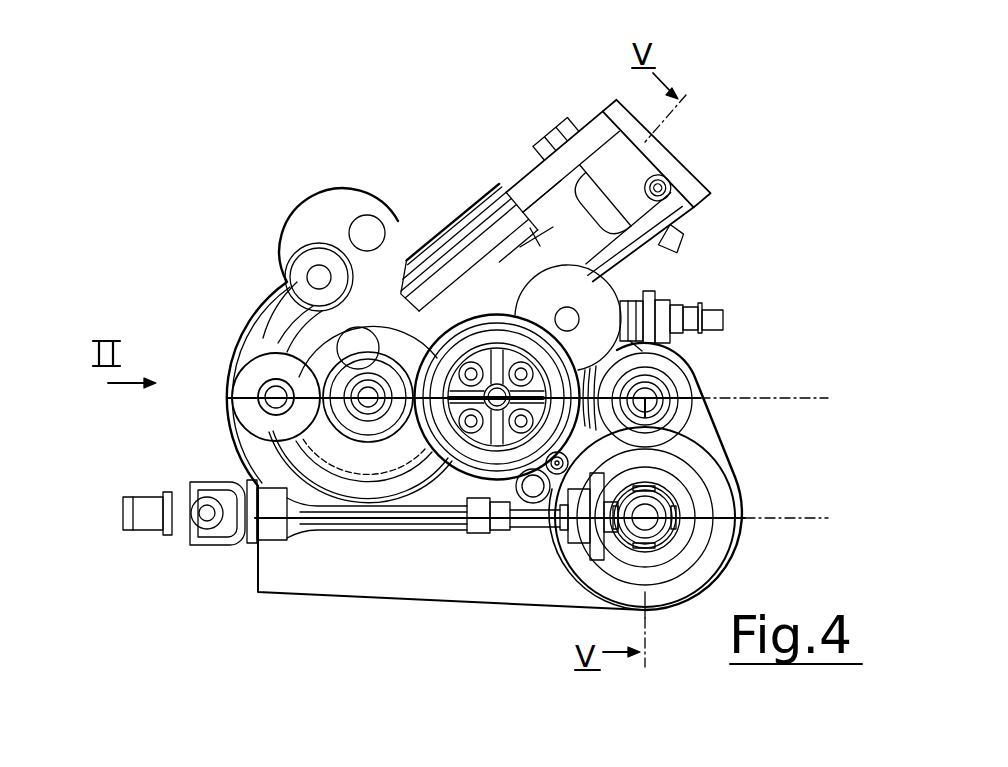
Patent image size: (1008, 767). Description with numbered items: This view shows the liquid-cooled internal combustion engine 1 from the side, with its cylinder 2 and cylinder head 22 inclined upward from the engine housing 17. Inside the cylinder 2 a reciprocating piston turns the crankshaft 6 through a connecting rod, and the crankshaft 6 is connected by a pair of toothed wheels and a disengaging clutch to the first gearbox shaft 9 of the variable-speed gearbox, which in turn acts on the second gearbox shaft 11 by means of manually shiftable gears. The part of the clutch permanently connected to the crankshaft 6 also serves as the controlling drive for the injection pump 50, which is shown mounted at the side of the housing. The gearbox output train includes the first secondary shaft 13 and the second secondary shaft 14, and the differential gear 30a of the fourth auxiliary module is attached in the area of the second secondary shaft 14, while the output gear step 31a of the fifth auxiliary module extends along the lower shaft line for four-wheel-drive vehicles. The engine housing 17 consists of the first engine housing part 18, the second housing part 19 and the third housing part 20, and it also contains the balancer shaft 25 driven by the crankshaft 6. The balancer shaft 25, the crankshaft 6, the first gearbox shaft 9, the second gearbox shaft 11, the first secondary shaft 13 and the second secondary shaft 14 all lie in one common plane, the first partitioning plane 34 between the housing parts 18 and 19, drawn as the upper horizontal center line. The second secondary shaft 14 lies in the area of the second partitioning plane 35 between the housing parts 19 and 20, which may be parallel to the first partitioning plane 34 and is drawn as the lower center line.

The internal combustion engine 1 is at (424, 226).
The cylinder 2 is at (482, 188).
The crankshaft 6 is at (365, 392).
The first gearbox shaft 9 is at (499, 392).
The second gearbox shaft 11 is at (657, 376).
The first secondary shaft 13 is at (673, 409).
The second secondary shaft 14 is at (647, 527).
The engine housing 17 is at (265, 298).
The first engine housing part 18 is at (235, 350).
The second housing part 19 is at (243, 453).
The third housing part 20 is at (255, 570).
The cylinder head 22 is at (675, 231).
The balancer shaft 25 is at (265, 403).
The differential gear 30a is at (693, 488).
The output gear step 31a is at (533, 522).
The first partitioning plane 34 is at (793, 391).
The second partitioning plane 35 is at (810, 512).
The injection pump 50 is at (717, 317).